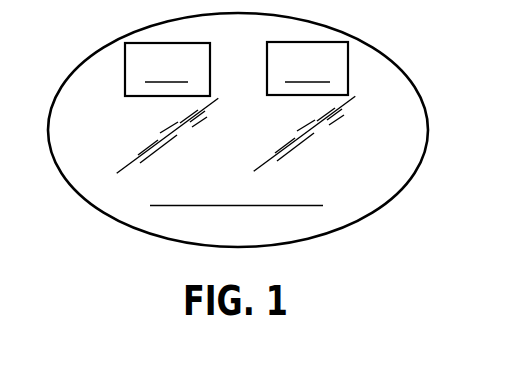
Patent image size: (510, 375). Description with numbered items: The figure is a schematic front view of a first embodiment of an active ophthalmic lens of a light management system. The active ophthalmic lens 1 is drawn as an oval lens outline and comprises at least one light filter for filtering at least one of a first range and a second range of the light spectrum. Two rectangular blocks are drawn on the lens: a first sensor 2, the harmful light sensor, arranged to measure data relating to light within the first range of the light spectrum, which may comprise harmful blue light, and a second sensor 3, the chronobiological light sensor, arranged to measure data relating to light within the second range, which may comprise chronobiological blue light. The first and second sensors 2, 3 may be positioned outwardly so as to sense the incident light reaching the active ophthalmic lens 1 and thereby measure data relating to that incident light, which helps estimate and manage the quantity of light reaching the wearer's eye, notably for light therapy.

The active ophthalmic lens 1 is at (427, 110).
The first sensor 2 is at (125, 70).
The second sensor 3 is at (348, 68).